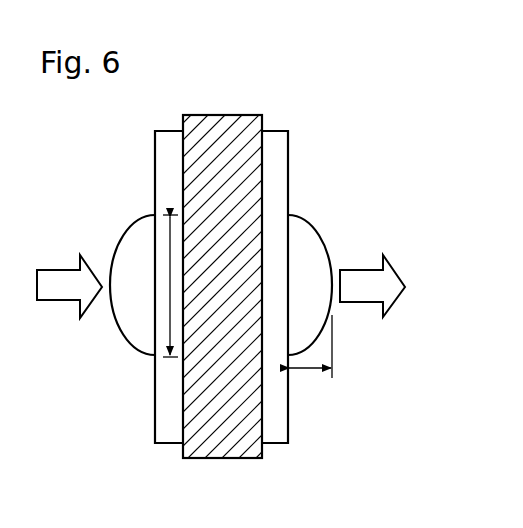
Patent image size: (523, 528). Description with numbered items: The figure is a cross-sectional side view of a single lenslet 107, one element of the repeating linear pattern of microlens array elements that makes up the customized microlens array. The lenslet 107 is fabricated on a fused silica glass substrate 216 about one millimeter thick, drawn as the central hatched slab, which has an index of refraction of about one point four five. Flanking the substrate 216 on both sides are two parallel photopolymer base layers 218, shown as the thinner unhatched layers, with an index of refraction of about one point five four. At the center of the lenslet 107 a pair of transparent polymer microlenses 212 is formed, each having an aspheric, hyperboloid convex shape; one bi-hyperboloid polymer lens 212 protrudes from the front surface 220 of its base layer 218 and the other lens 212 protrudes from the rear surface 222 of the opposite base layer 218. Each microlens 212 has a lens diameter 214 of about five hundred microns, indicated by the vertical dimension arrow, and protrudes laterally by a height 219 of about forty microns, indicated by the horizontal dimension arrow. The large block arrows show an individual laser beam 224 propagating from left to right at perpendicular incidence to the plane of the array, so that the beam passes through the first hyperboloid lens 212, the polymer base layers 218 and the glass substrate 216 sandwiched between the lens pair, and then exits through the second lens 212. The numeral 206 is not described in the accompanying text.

The lenslet 107 is at (303, 78).
The filter element 206 is at (350, 164).
The microlens 212 is at (122, 237).
The lens diameter 214 is at (170, 250).
The substrate 216 is at (211, 115).
The photopolymer base layer 218 is at (170, 131).
The height 219 is at (310, 369).
The front surface 220 is at (288, 418).
The rear surface 222 is at (155, 432).
The laser beam 224 is at (372, 286).